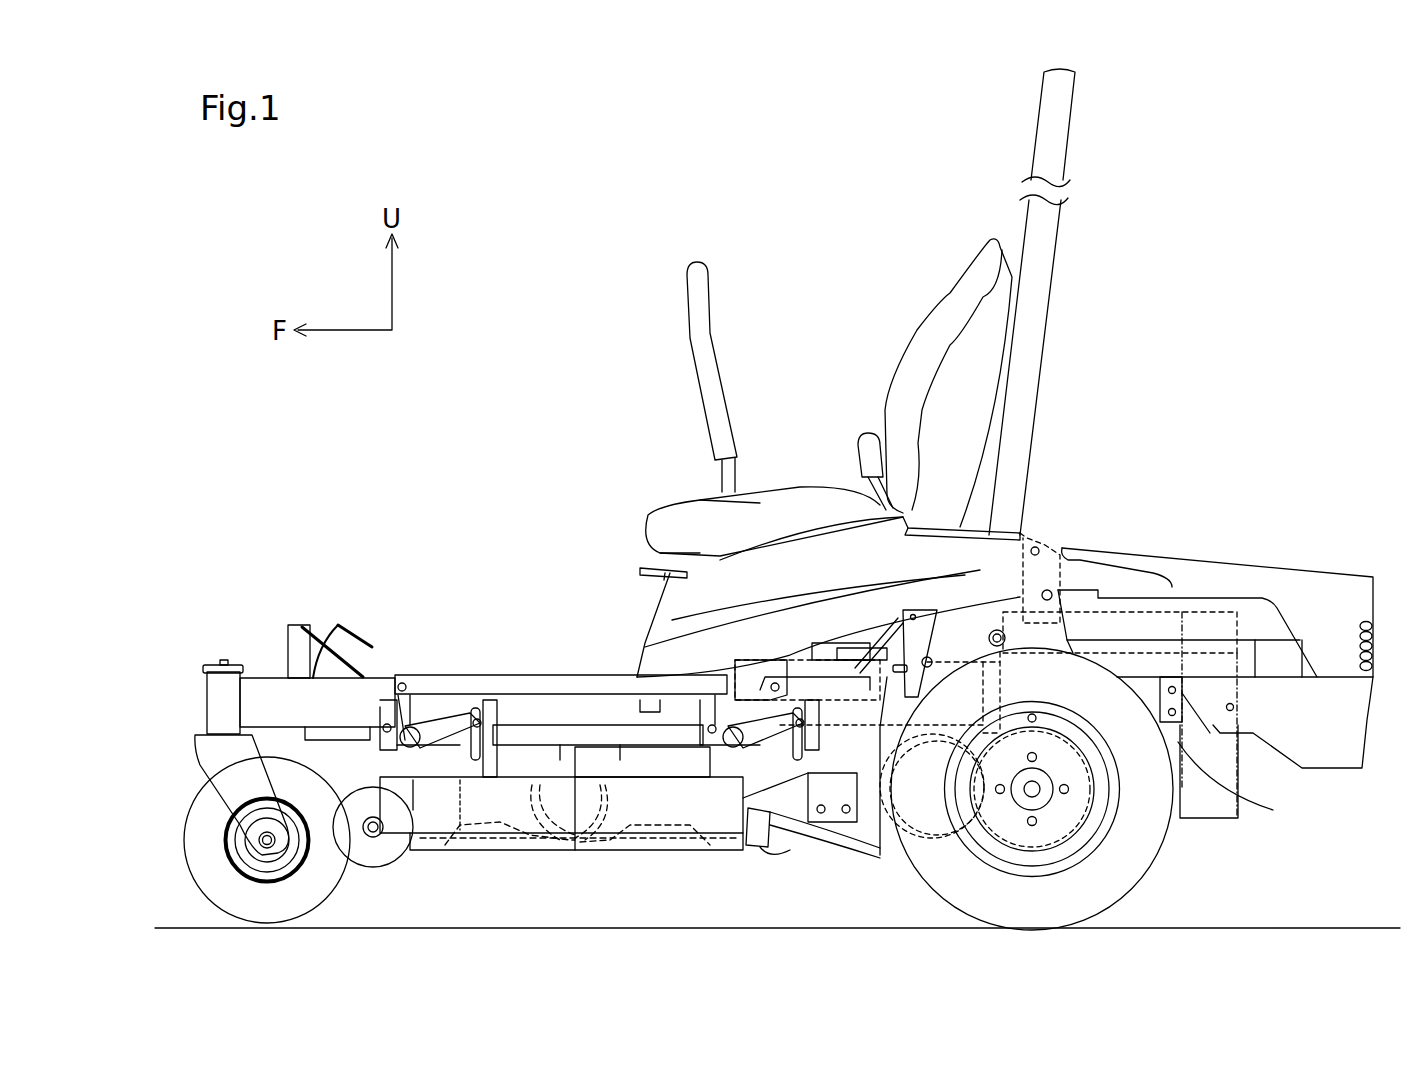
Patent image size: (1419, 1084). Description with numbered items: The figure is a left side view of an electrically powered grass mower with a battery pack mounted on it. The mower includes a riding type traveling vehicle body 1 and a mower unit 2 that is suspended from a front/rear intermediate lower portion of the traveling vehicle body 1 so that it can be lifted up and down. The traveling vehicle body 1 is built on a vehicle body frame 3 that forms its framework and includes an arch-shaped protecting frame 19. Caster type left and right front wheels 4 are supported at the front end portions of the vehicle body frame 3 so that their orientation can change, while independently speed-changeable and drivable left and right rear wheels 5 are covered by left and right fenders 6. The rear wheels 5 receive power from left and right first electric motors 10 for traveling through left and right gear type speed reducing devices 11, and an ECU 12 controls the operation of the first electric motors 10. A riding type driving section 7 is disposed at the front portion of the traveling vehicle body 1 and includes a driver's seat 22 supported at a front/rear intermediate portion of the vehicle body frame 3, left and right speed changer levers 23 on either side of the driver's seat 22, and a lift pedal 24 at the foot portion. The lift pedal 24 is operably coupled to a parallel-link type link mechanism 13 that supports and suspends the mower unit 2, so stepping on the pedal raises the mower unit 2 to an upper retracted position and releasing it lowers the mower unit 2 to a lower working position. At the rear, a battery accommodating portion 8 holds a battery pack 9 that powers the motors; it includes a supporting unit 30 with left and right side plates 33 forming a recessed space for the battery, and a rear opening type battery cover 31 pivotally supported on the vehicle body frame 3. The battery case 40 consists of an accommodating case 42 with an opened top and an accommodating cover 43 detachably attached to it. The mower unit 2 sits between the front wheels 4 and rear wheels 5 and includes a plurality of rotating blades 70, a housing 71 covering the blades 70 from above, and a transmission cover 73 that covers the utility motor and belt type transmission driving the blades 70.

The traveling vehicle body 1 is at (222, 628).
The mower unit 2 is at (722, 855).
The vehicle body frame 3 is at (258, 672).
The front wheels 4 is at (186, 838).
The rear wheels 5 is at (1143, 862).
The fenders 6 is at (663, 622).
The driving section 7 is at (784, 188).
The battery accommodating portion 8 is at (1255, 550).
The battery pack 9 is at (1122, 606).
The first electric motors 10 is at (928, 838).
The gear type speed reducing devices 11 is at (946, 848).
The ECU 12 is at (820, 643).
The link mechanism 13 is at (492, 672).
The protecting frame 19 is at (1050, 253).
The driver's seat 22 is at (917, 343).
The speed changer levers 23 is at (708, 343).
The lift pedal 24 is at (340, 652).
The battery cover 31 is at (1296, 563).
The side plates 33 is at (1178, 743).
The supporting unit 30 is at (1269, 785).
The accommodating case 42 is at (1213, 820).
The accommodating cover 43 is at (1178, 608).
The battery case 40 is at (1168, 691).
The blades 70 is at (640, 848).
The housing 71 is at (498, 853).
The transmission cover 73 is at (614, 752).